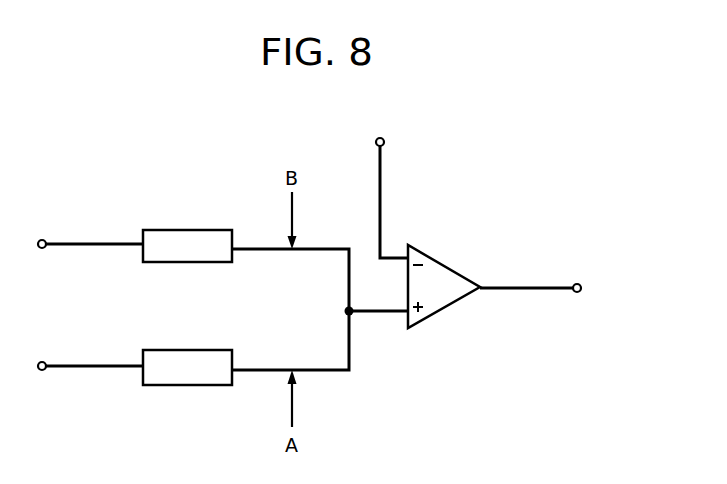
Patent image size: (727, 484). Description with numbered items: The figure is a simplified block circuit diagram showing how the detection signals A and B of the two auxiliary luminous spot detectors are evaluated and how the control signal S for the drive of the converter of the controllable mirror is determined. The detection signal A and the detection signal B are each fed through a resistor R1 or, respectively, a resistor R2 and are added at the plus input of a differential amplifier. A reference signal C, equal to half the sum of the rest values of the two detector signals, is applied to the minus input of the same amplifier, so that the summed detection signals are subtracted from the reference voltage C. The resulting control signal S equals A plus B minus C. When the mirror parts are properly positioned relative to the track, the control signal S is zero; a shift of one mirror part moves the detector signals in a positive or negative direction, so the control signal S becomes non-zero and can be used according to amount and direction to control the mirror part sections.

The resistor R1 is at (187, 246).
The resistor R2 is at (187, 367).
The detection signal A is at (77, 367).
The detection signal B is at (77, 245).
The reference signal C is at (390, 187).
The control signal S is at (576, 289).